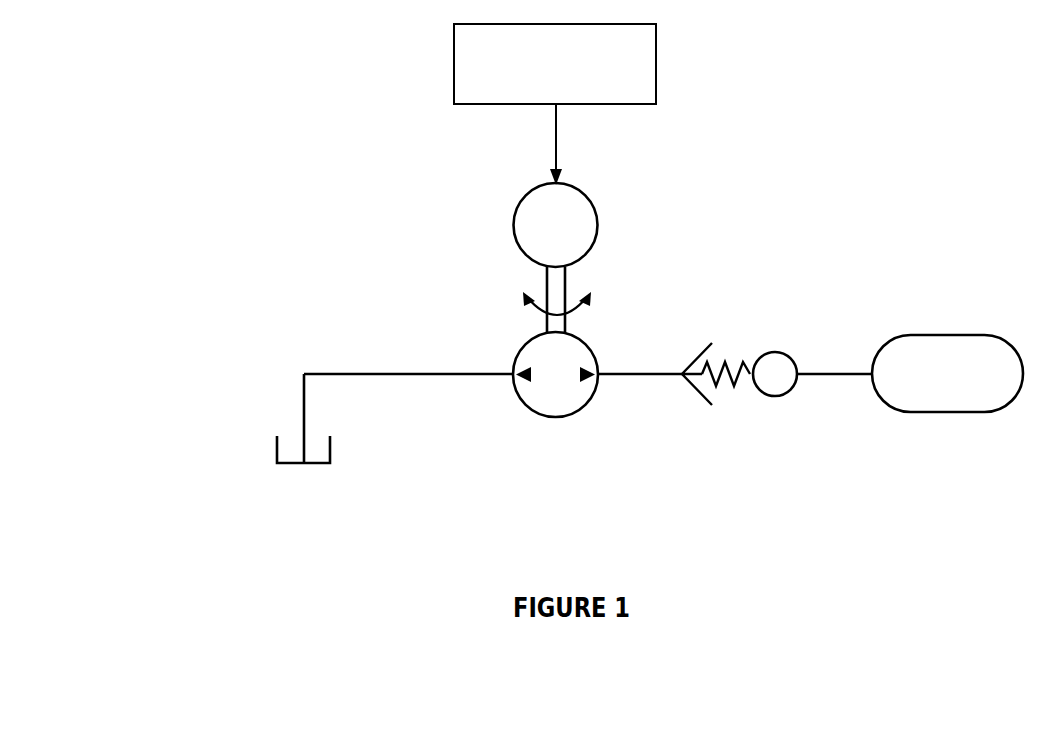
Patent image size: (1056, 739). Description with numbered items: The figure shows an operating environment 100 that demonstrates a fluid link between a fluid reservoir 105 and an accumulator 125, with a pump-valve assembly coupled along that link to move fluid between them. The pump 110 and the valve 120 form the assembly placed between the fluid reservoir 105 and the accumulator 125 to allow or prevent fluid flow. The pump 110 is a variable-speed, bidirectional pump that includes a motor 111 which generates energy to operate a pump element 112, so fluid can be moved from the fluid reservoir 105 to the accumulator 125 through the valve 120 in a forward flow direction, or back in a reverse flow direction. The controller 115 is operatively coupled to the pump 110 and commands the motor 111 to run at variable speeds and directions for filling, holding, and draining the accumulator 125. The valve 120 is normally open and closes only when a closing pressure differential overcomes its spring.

The operating environment 100 is at (243, 77).
The fluid reservoir 105 is at (256, 439).
The pump 110 is at (500, 362).
The motor 111 is at (541, 239).
The pump element 112 is at (540, 404).
The controller 115 is at (538, 90).
The valve 120 is at (800, 330).
The accumulator 125 is at (943, 335).